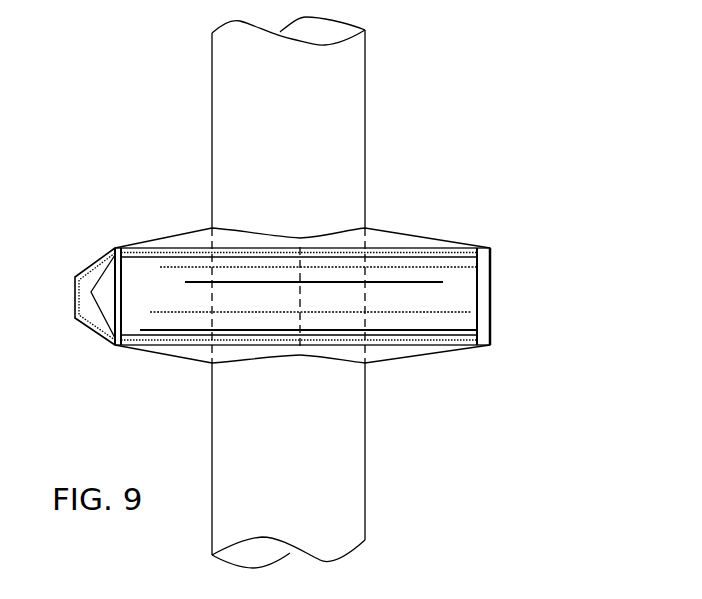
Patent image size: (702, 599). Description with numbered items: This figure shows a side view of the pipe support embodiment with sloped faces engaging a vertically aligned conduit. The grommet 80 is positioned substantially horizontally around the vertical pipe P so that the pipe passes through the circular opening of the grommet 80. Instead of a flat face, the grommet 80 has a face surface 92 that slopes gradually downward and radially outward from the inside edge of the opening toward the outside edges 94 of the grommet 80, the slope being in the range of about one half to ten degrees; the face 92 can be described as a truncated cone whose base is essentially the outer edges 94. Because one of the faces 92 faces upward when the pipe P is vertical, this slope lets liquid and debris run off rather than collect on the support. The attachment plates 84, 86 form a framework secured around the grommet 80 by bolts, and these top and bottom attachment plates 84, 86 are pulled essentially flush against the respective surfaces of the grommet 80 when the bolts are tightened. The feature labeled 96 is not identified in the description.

The grommet 80 is at (438, 378).
The attachment plate 84 is at (88, 318).
The attachment plate 86 is at (493, 300).
The face surface 92 is at (387, 240).
The outside edges 94 is at (203, 323).
The band 96 is at (182, 230).
The pipe P is at (330, 457).